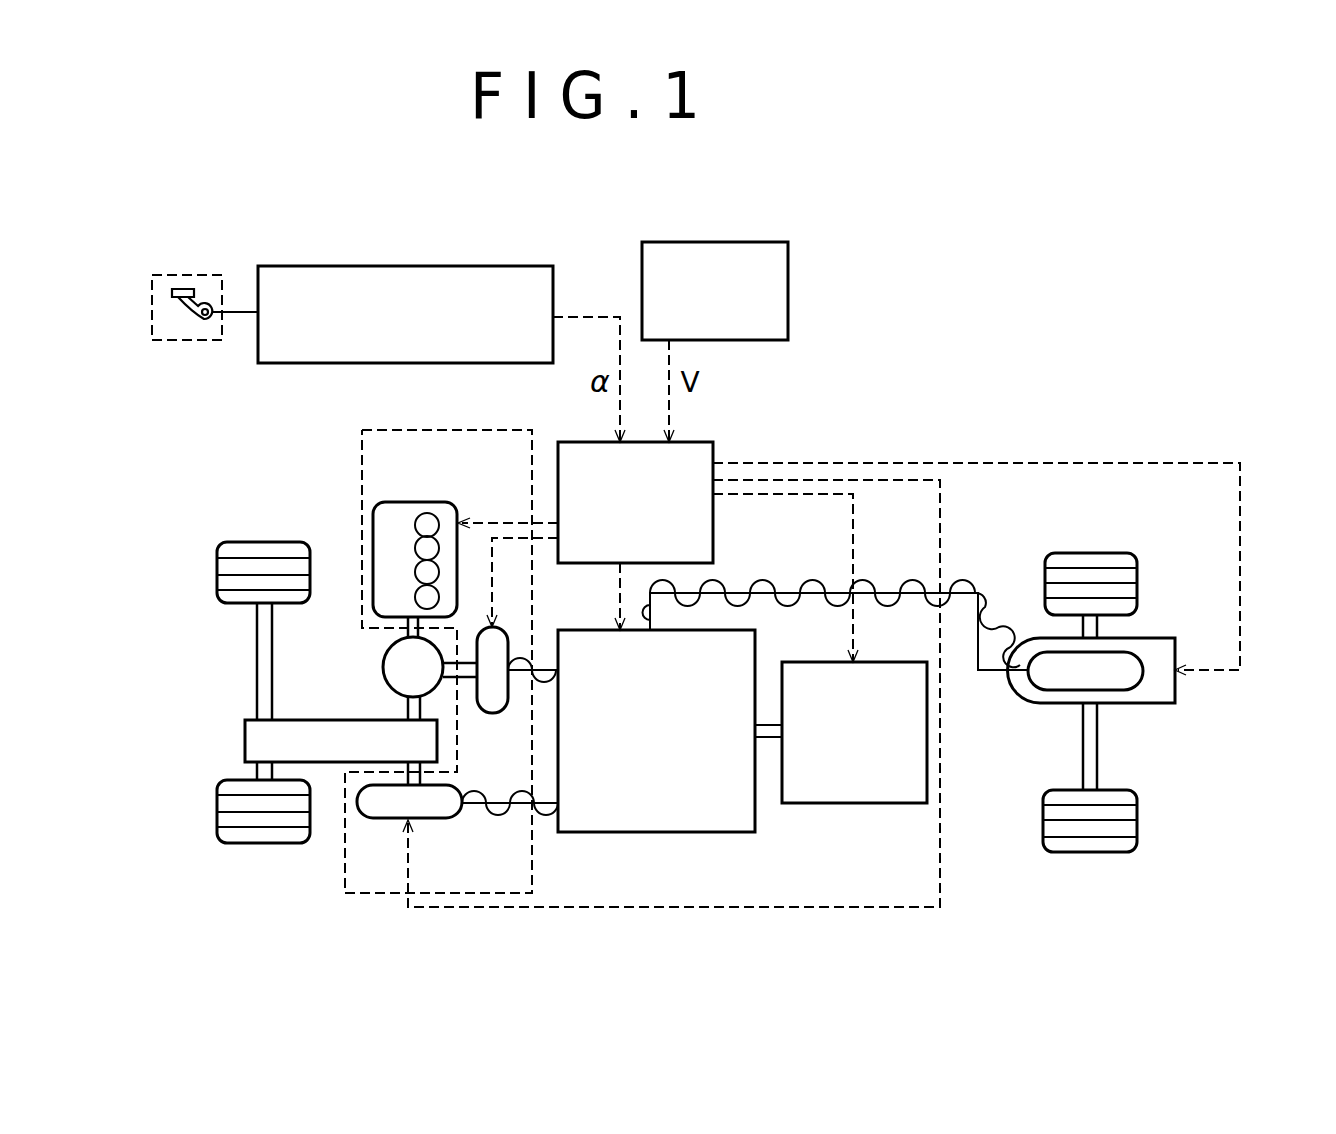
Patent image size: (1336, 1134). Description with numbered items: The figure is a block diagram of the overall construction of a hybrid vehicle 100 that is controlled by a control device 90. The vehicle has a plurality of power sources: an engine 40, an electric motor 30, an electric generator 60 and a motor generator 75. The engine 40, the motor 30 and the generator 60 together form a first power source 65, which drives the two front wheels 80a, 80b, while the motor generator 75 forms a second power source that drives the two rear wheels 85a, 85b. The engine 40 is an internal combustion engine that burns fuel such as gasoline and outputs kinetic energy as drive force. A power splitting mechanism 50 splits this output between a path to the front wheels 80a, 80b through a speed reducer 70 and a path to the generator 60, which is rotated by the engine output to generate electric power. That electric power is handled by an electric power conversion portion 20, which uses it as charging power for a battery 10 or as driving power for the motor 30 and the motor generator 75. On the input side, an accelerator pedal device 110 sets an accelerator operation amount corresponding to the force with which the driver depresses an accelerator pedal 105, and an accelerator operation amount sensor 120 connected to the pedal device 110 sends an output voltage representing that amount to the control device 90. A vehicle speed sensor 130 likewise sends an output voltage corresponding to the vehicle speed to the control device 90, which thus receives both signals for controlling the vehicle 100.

The battery 10 is at (850, 803).
The electric power conversion portion 20 is at (625, 832).
The electric motor 30 is at (392, 820).
The engine 40 is at (413, 502).
The power splitting mechanism 50 is at (389, 652).
The electric generator 60 is at (488, 713).
The power source 65 is at (362, 452).
The speed reducer 70 is at (300, 720).
The motor generator 75 is at (1058, 703).
The front wheel 80a is at (268, 542).
The front wheel 80b is at (265, 843).
The rear wheel 85a is at (1093, 553).
The rear wheel 85b is at (1090, 852).
The control device 90 is at (713, 531).
The hybrid vehicle 100 is at (962, 973).
The accelerator pedal 105 is at (183, 289).
The accelerator pedal device 110 is at (186, 340).
The accelerator operation amount sensor 120 is at (483, 266).
The vehicle speed sensor 130 is at (760, 242).